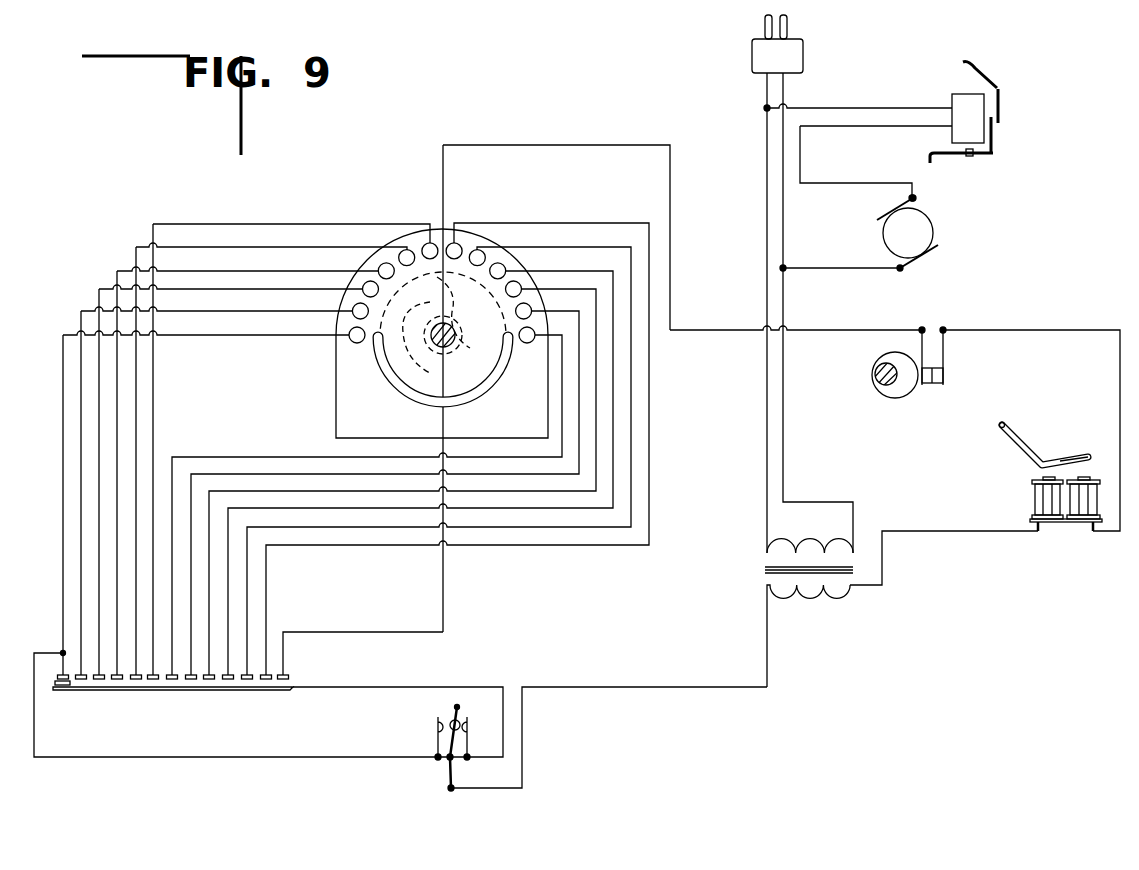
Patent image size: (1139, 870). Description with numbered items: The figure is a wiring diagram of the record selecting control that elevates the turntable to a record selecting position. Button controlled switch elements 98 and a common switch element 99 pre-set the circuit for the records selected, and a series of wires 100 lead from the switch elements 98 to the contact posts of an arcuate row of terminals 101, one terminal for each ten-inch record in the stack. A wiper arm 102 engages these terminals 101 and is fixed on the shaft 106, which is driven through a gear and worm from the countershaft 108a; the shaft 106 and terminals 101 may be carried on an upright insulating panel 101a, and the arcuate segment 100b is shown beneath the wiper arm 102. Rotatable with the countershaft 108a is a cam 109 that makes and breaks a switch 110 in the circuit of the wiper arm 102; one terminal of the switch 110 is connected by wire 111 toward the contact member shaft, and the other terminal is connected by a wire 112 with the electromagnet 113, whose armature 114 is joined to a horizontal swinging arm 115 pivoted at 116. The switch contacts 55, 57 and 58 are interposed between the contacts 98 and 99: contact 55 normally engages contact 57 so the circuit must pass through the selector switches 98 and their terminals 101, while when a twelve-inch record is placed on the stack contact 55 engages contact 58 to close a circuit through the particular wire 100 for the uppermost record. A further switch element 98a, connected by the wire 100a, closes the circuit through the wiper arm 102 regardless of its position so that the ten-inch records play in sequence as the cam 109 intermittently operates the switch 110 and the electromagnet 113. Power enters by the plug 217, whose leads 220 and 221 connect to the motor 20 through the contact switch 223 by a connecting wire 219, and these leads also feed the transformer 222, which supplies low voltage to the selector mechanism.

The motor 20 is at (935, 222).
The flexible electric contact member 55 is at (456, 707).
The contact arm 57 is at (466, 738).
The contact 58 is at (437, 735).
The button controlled switch elements 98 is at (62, 680).
The switch element 98a is at (290, 676).
The common switch element 99 is at (240, 692).
The wires 100 is at (62, 470).
The wire 100a is at (364, 632).
The arcuate contact segment 100b is at (494, 372).
The terminals 101 is at (499, 266).
The insulating panel 101a is at (513, 414).
The wiper arm 102 is at (420, 352).
The shaft 106 is at (445, 344).
The countershaft 108a is at (880, 386).
The cam 109 is at (902, 393).
The switch 110 is at (935, 386).
The wire 111 is at (838, 330).
The wire 112 is at (1046, 330).
The electromagnet 113 is at (1066, 523).
The armature 114 is at (1068, 455).
The horizontal swinging arm 115 is at (1043, 444).
The pivot 116 is at (1008, 420).
The plug 217 is at (777, 44).
The conductor 219 is at (801, 156).
The lead 220 is at (785, 218).
The lead 221 is at (766, 218).
The transformer 222 is at (802, 592).
The contact switch 223 is at (958, 104).